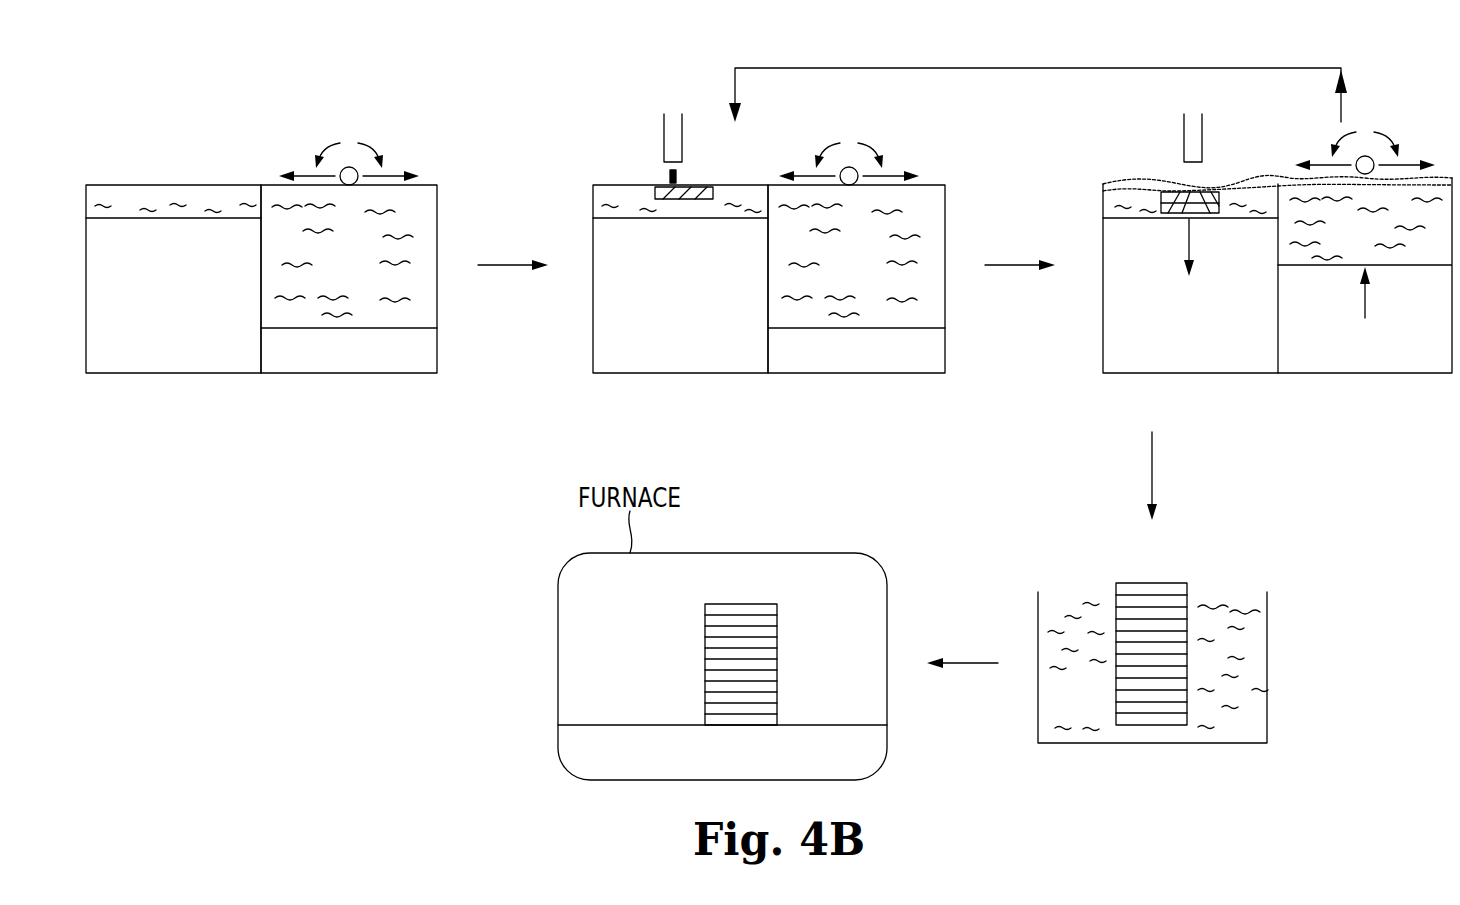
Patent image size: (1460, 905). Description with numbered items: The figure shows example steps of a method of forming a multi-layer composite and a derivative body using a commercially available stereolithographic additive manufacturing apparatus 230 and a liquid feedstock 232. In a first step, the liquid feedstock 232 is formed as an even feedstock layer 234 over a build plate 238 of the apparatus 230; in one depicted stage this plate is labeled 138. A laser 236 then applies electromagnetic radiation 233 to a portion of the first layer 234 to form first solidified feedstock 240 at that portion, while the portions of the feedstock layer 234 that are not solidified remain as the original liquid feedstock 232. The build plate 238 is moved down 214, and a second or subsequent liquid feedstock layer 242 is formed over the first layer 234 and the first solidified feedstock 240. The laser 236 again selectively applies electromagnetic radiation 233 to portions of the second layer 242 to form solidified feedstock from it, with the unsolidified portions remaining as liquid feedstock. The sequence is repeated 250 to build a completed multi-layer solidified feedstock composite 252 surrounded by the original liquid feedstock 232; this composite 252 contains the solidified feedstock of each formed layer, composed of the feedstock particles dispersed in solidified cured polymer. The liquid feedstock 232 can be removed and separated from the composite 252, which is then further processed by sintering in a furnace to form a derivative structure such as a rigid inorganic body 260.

The stereolithographic additive manufacturing apparatus 230 is at (163, 92).
The liquid feedstock 232 is at (367, 279).
The feedstock layer 234 is at (228, 205).
The build plate 238 is at (155, 219).
The build plate 138 is at (643, 219).
The laser 236 is at (664, 129).
The first solidified feedstock 240 is at (656, 188).
The electromagnetic radiation 233 is at (678, 174).
The second liquid feedstock layer 242 is at (1103, 205).
The moving down of build plate 214 is at (1277, 268).
The repeating of sequence 250 is at (1038, 79).
The multi-layer solidified feedstock composite 252 is at (1170, 610).
The rigid inorganic body 260 is at (753, 655).